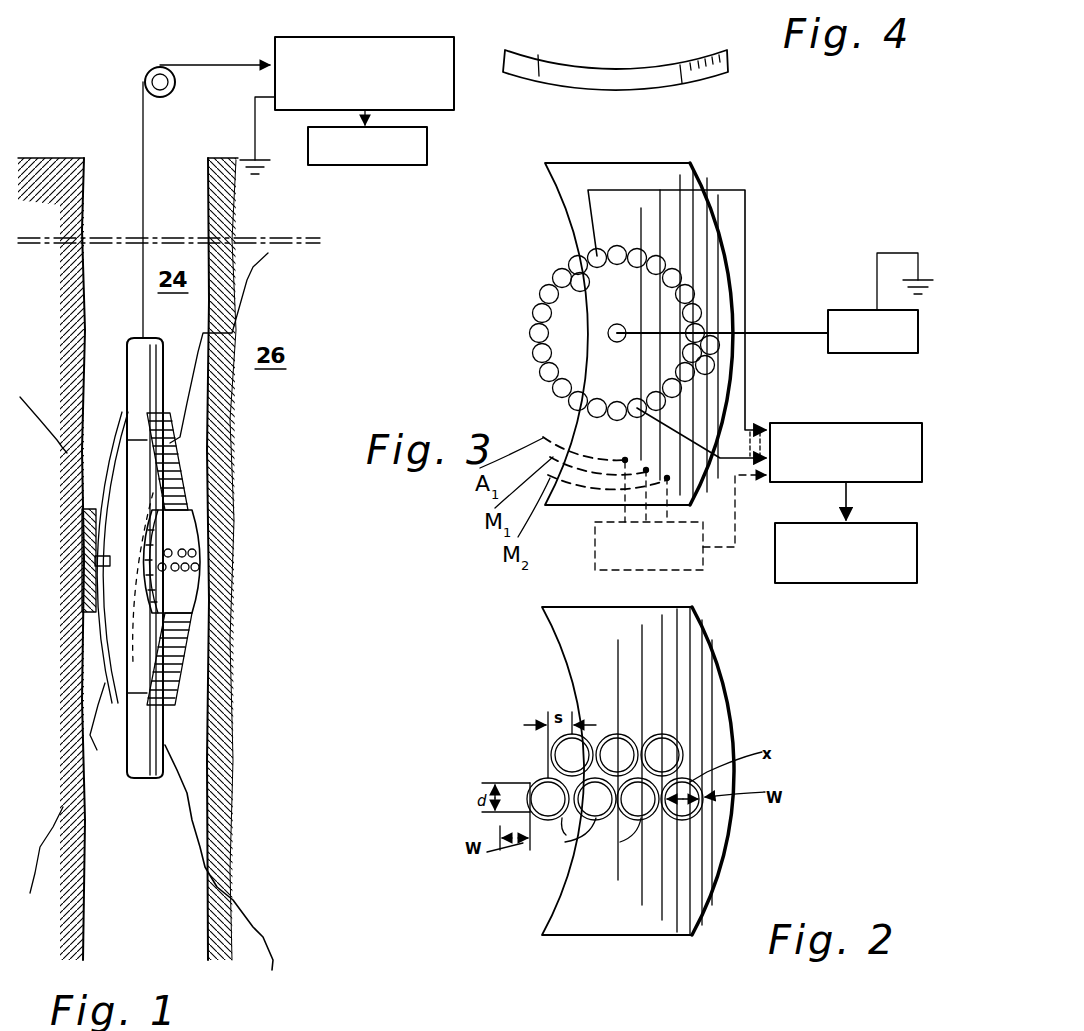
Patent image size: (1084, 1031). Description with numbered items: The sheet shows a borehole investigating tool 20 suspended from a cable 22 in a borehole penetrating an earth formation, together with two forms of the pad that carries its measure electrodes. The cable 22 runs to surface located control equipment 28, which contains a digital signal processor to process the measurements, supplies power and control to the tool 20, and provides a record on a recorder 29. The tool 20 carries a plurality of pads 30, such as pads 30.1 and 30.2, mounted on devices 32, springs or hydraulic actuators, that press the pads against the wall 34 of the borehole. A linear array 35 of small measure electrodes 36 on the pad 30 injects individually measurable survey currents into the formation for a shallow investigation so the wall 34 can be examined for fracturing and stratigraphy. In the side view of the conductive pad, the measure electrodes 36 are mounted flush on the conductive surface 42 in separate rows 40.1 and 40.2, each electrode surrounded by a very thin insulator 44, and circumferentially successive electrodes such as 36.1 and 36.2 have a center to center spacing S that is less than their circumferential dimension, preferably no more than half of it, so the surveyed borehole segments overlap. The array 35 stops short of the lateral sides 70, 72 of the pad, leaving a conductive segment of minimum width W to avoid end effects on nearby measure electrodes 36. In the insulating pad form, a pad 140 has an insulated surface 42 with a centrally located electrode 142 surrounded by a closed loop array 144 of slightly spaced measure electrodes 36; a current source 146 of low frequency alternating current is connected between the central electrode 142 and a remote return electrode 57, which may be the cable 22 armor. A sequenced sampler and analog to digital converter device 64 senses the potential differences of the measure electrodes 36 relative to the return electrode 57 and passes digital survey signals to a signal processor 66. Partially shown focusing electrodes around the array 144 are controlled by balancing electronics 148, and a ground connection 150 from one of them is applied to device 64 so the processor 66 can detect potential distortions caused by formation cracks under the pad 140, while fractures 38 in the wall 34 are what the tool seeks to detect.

In FIG. 1, the borehole investigating tool 20 is at (140, 782).
In FIG. 1, the cable 22 is at (142, 125).
In FIG. 1, the surface located control equipment 28 is at (380, 37).
In FIG. 1, the recorder 29 is at (355, 165).
In FIG. 2, the pad 30 is at (670, 937).
In FIG. 1, the pad 30.1 is at (180, 597).
In FIG. 1, the pad 30.2 is at (82, 575).
In FIG. 1, the pad pressing devices 32 is at (118, 437).
In FIG. 1, the borehole wall 34 is at (73, 667).
In FIG. 1, the array of measure electrodes 35 is at (180, 532).
In FIG. 2, the array of measure electrodes 35 is at (582, 868).
In FIG. 1, the measure electrode 36 is at (198, 572).
In FIG. 3, the measure electrode 36 is at (657, 267).
In FIG. 2, the measure electrode 36 is at (697, 813).
In FIG. 2, the measure electrode 36.1 is at (548, 815).
In FIG. 2, the measure electrode 36.2 is at (587, 740).
In FIG. 1, the fracture 38 is at (263, 783).
In FIG. 2, the row of measure electrodes 40.1 is at (682, 838).
In FIG. 2, the row of measure electrodes 40.2 is at (530, 753).
In FIG. 4, the pad surface 42 is at (600, 90).
In FIG. 3, the pad surface 42 is at (543, 222).
In FIG. 2, the pad surface 42 is at (547, 652).
In FIG. 2, the insulator 44 is at (602, 836).
In FIG. 3, the return electrode 57 is at (922, 260).
In FIG. 3, the sequenced sampling and holding device with analog to digital converter 64 is at (882, 420).
In FIG. 3, the signal processor 66 is at (875, 585).
In FIG. 2, the lateral side of pad 70 is at (500, 767).
In FIG. 2, the lateral side of pad 72 is at (730, 747).
In FIG. 4, the insulating pad 140 is at (532, 60).
In FIG. 3, the insulating pad 140 is at (672, 163).
In FIG. 3, the central electrode 142 is at (610, 334).
In FIG. 3, the closed loop array 144 is at (528, 370).
In FIG. 3, the current source 146 is at (848, 310).
In FIG. 3, the balancing electronics 148 is at (607, 568).
In FIG. 3, the ground connection 150 is at (728, 552).